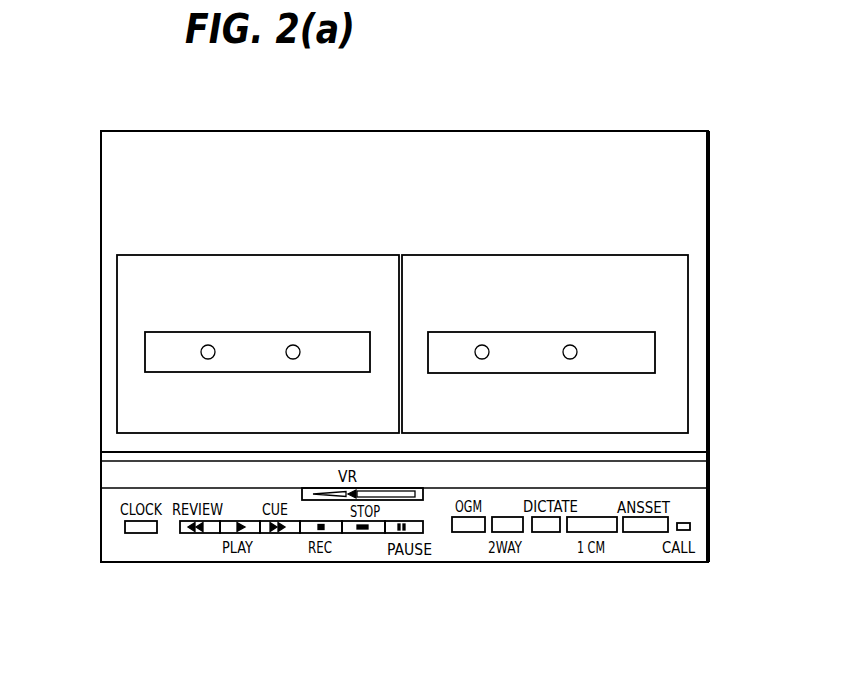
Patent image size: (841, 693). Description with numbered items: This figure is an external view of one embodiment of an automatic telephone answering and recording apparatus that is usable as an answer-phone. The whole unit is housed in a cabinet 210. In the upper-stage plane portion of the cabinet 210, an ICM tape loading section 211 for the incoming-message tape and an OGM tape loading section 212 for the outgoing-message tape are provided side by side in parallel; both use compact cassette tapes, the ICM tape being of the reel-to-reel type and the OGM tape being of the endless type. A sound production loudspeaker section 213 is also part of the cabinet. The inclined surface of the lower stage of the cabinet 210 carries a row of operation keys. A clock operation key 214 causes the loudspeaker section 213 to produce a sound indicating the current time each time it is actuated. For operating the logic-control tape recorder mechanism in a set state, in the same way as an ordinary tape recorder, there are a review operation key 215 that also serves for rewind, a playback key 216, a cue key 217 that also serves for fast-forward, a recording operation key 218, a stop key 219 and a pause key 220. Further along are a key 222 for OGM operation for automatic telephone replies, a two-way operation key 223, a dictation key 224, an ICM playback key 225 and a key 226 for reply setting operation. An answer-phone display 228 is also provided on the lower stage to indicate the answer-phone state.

The cabinet 210 is at (710, 238).
The ICM tape loading section 211 is at (125, 401).
The OGM tape loading section 212 is at (682, 398).
The sound production loudspeaker section 213 is at (583, 138).
The clock operation key 214 is at (145, 535).
The review operation key 215 is at (183, 535).
The playback key 216 is at (225, 535).
The cue key 217 is at (293, 533).
The recording operation key 218 is at (337, 533).
The stop key 219 is at (378, 533).
The pause key 220 is at (423, 532).
The key for OGM operation 222 is at (475, 532).
The two-way operation key 223 is at (520, 532).
The dictation key 224 is at (553, 532).
The ICM playback key 225 is at (610, 533).
The key for reply setting operation 226 is at (652, 533).
The answer-phone display 228 is at (690, 525).